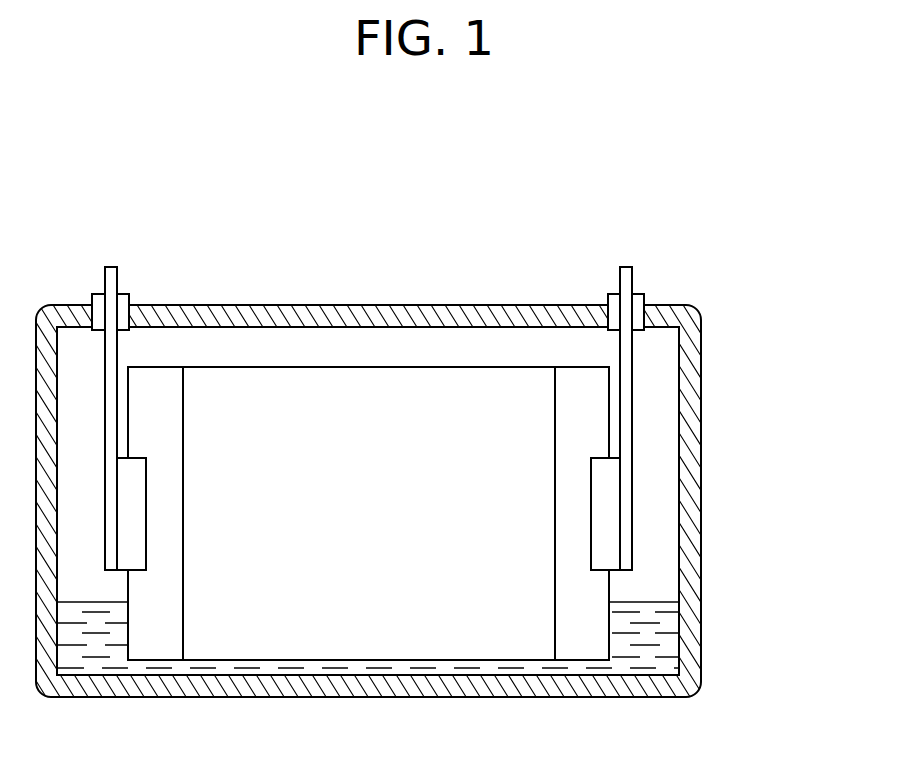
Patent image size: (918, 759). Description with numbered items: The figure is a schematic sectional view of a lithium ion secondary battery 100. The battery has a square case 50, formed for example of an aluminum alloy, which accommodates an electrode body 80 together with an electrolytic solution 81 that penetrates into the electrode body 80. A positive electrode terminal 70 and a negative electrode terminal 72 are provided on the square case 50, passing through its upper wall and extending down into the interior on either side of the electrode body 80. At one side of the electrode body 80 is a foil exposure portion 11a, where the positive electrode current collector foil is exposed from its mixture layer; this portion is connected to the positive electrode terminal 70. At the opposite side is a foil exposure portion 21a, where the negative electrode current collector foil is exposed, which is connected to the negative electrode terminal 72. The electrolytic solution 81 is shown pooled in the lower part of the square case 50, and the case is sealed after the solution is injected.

The battery 100 is at (459, 480).
The square case 50 is at (692, 368).
The positive electrode terminal 70 is at (110, 265).
The negative electrode terminal 72 is at (625, 265).
The electrode body 80 is at (369, 504).
The electrolytic solution 81 is at (647, 626).
The foil exposure portion 11a is at (152, 643).
The foil exposure portion 21a is at (580, 643).